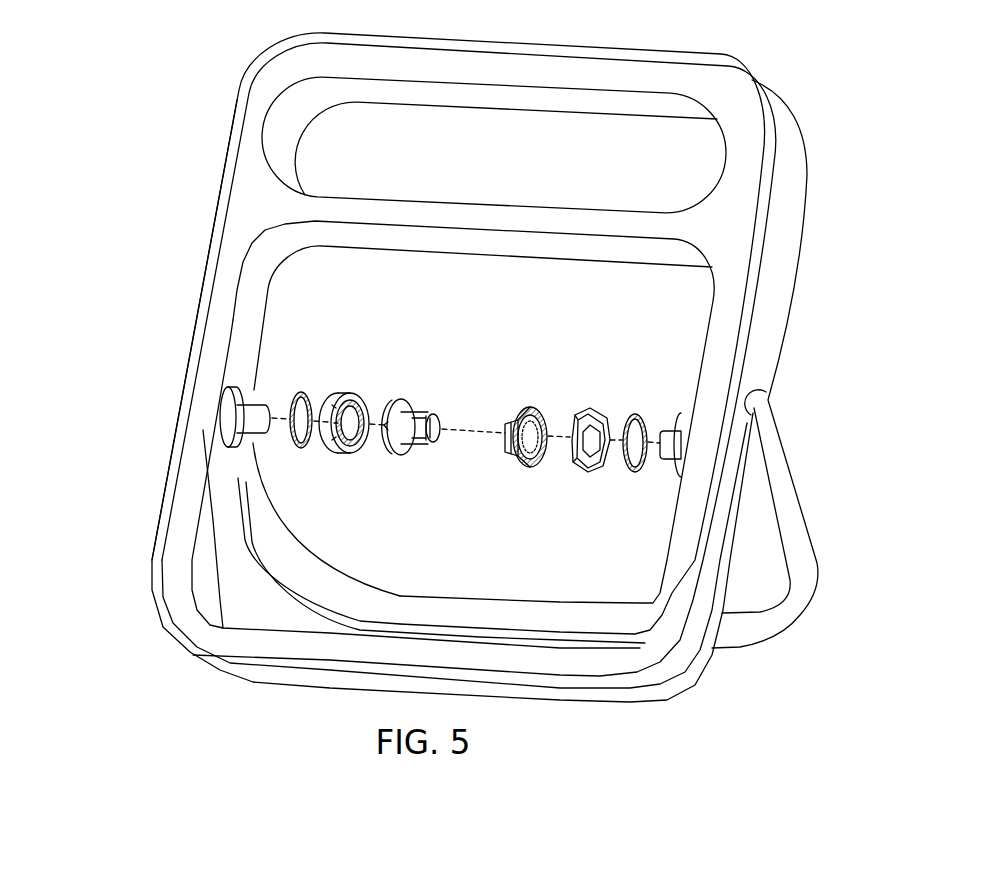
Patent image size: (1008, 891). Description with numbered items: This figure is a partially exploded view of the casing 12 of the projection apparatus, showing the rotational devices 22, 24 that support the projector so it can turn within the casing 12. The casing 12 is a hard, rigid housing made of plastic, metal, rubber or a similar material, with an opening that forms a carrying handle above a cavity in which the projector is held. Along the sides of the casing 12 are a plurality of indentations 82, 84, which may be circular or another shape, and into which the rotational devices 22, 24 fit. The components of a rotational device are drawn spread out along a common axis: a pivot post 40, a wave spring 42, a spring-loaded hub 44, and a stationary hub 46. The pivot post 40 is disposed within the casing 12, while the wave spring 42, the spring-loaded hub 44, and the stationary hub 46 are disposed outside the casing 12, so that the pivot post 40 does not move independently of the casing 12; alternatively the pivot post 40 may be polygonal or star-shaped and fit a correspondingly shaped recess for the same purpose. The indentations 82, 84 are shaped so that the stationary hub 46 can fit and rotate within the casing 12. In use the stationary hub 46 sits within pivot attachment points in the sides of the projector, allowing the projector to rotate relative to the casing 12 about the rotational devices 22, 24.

The casing 12 is at (748, 338).
The rotational device 22 is at (381, 385).
The rotational device 24 is at (593, 392).
The pivot post 40 is at (253, 395).
The wave spring 42 is at (303, 392).
The spring-loaded hub 44 is at (357, 453).
The stationary hub 46 is at (441, 418).
The indentation 82 is at (228, 456).
The indentation 84 is at (682, 470).